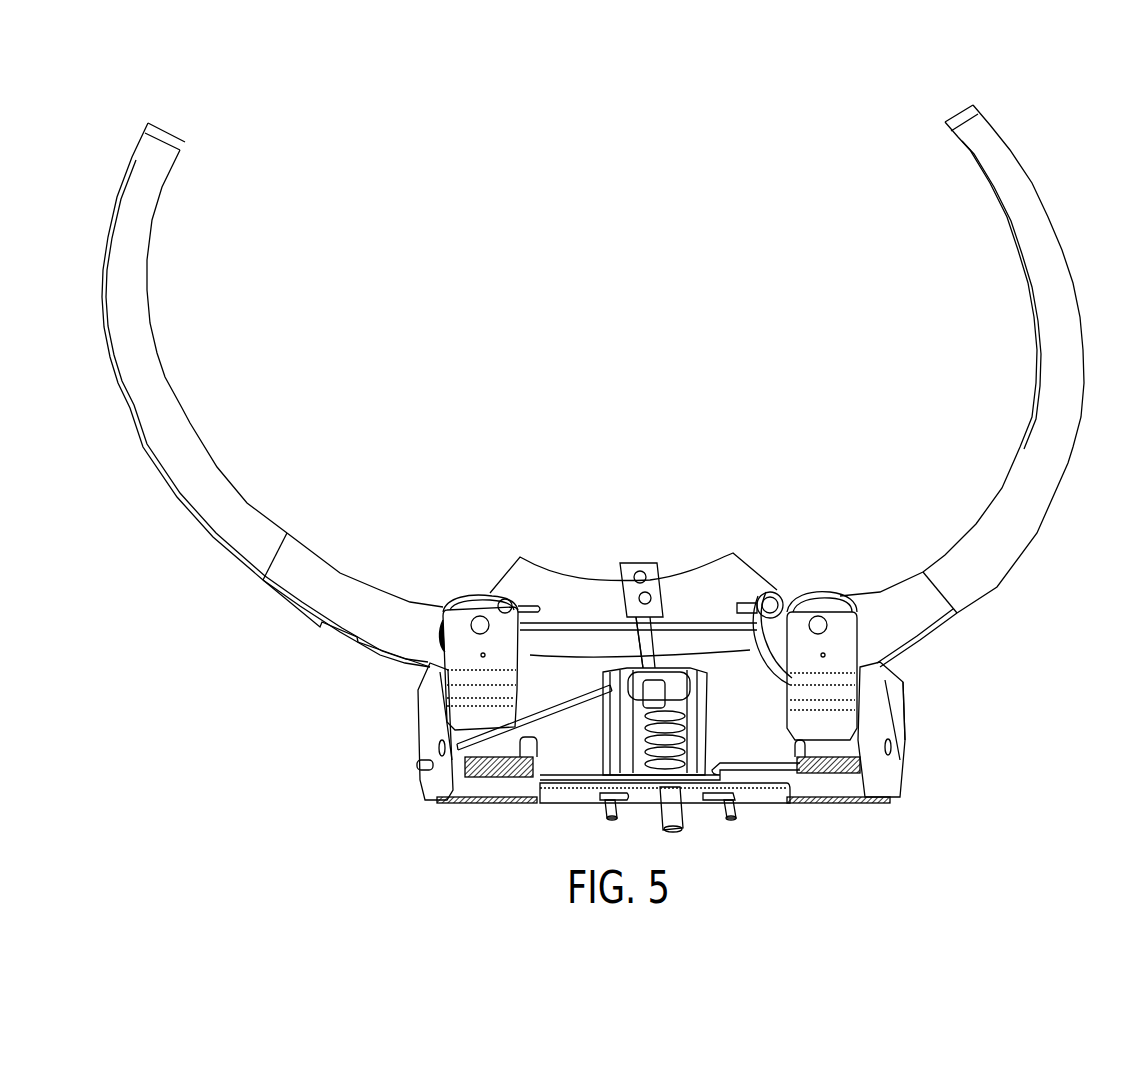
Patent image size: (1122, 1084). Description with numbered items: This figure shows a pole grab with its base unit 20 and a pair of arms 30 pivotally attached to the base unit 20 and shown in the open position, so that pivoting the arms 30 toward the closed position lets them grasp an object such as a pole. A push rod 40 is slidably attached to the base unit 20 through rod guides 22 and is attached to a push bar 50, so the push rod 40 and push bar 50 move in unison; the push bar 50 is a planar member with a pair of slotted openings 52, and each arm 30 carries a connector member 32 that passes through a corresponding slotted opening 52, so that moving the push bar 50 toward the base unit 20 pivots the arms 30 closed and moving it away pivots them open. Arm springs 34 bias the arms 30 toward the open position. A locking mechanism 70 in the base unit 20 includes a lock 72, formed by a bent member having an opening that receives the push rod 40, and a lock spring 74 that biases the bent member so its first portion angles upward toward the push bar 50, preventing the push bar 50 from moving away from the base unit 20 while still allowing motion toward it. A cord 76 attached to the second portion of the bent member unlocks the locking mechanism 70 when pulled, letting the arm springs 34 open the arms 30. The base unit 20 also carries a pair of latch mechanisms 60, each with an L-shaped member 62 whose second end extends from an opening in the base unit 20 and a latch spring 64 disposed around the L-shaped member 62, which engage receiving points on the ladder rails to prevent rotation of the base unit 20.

The base unit 20 is at (915, 705).
The rod guides 22 is at (686, 773).
The arms 30 is at (163, 366).
The connector member 32 is at (777, 604).
The arm springs 34 is at (458, 600).
The push rod 40 is at (652, 672).
The push bar 50 is at (531, 565).
The slotted openings 52 is at (762, 600).
The latch mechanisms 60 is at (556, 735).
The L-shaped member 62 is at (728, 815).
The latch spring 64 is at (493, 793).
The locking mechanism 70 is at (708, 688).
The lock 72 is at (645, 723).
The lock spring 74 is at (650, 750).
The cord 76 is at (470, 735).